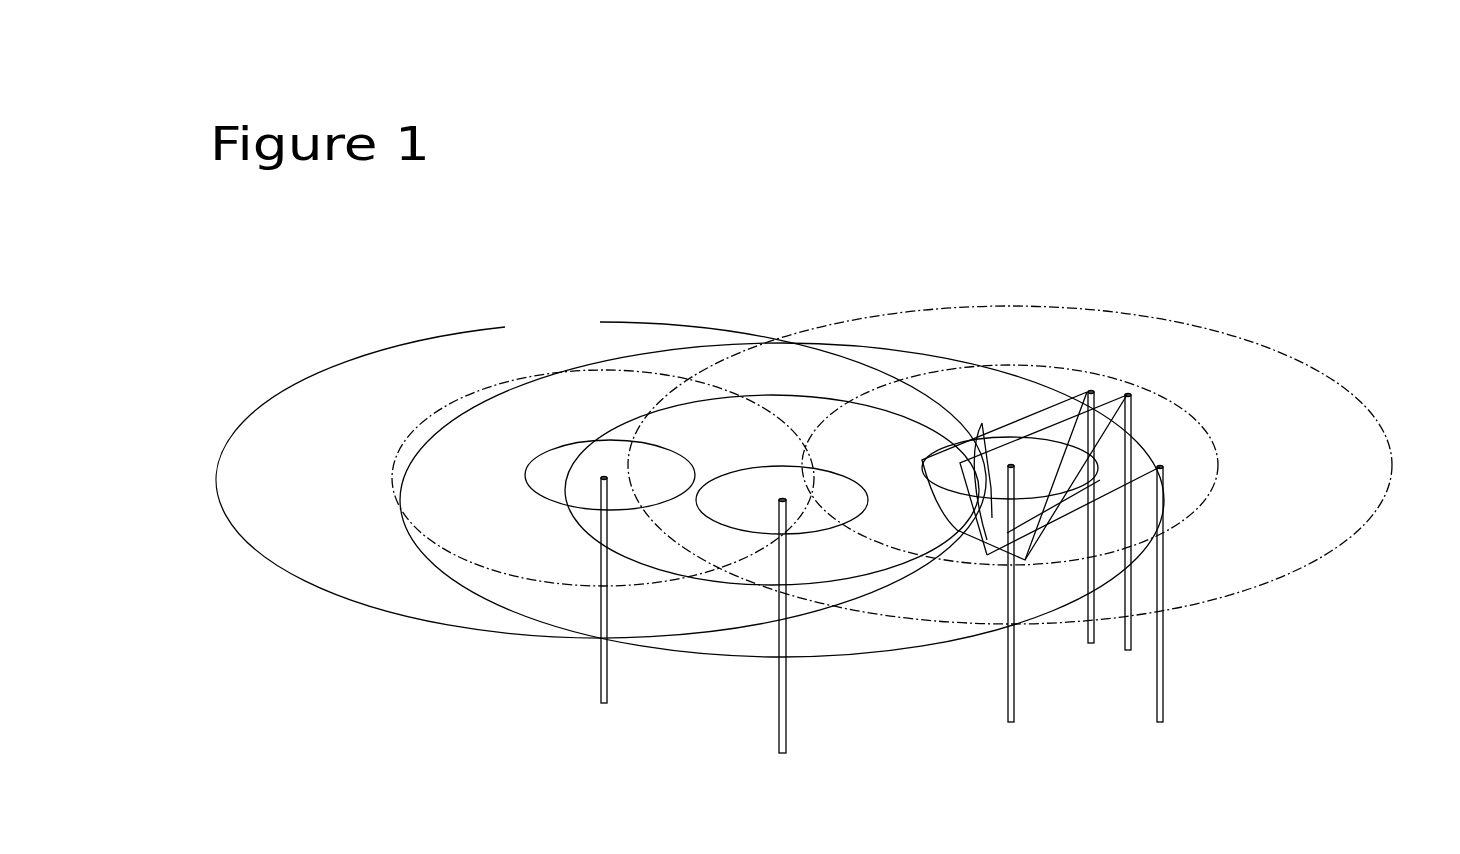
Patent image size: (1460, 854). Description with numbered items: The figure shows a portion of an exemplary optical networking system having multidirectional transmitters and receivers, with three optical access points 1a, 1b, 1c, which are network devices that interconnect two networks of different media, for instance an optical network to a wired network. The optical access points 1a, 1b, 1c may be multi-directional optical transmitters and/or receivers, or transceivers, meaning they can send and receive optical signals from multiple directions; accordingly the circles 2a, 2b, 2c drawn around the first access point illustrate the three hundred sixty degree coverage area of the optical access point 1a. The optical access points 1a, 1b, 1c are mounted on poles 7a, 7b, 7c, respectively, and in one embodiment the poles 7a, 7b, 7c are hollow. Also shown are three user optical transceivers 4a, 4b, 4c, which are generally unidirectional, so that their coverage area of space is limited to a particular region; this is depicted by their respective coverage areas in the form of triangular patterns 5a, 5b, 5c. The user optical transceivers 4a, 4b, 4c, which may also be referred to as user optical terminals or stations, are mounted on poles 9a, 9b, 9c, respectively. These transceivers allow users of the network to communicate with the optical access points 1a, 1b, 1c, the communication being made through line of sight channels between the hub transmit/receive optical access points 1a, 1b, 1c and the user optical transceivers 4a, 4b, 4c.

The optical access point 1a is at (604, 478).
The optical access point 1b is at (785, 497).
The optical access point 1c is at (1015, 463).
The circle 2a is at (525, 478).
The circle 2b is at (440, 540).
The circle 2c is at (235, 530).
The user optical transceiver 4a is at (1091, 392).
The user optical transceiver 4b is at (1137, 402).
The user optical transceiver 4c is at (1170, 465).
The triangular pattern 5a is at (1035, 415).
The triangular pattern 5b is at (1113, 402).
The triangular pattern 5c is at (1110, 493).
The pole 7a is at (595, 603).
The pole 7b is at (800, 720).
The pole 7c is at (1002, 680).
The pole 9a is at (1093, 643).
The pole 9b is at (1127, 655).
The pole 9c is at (1193, 640).